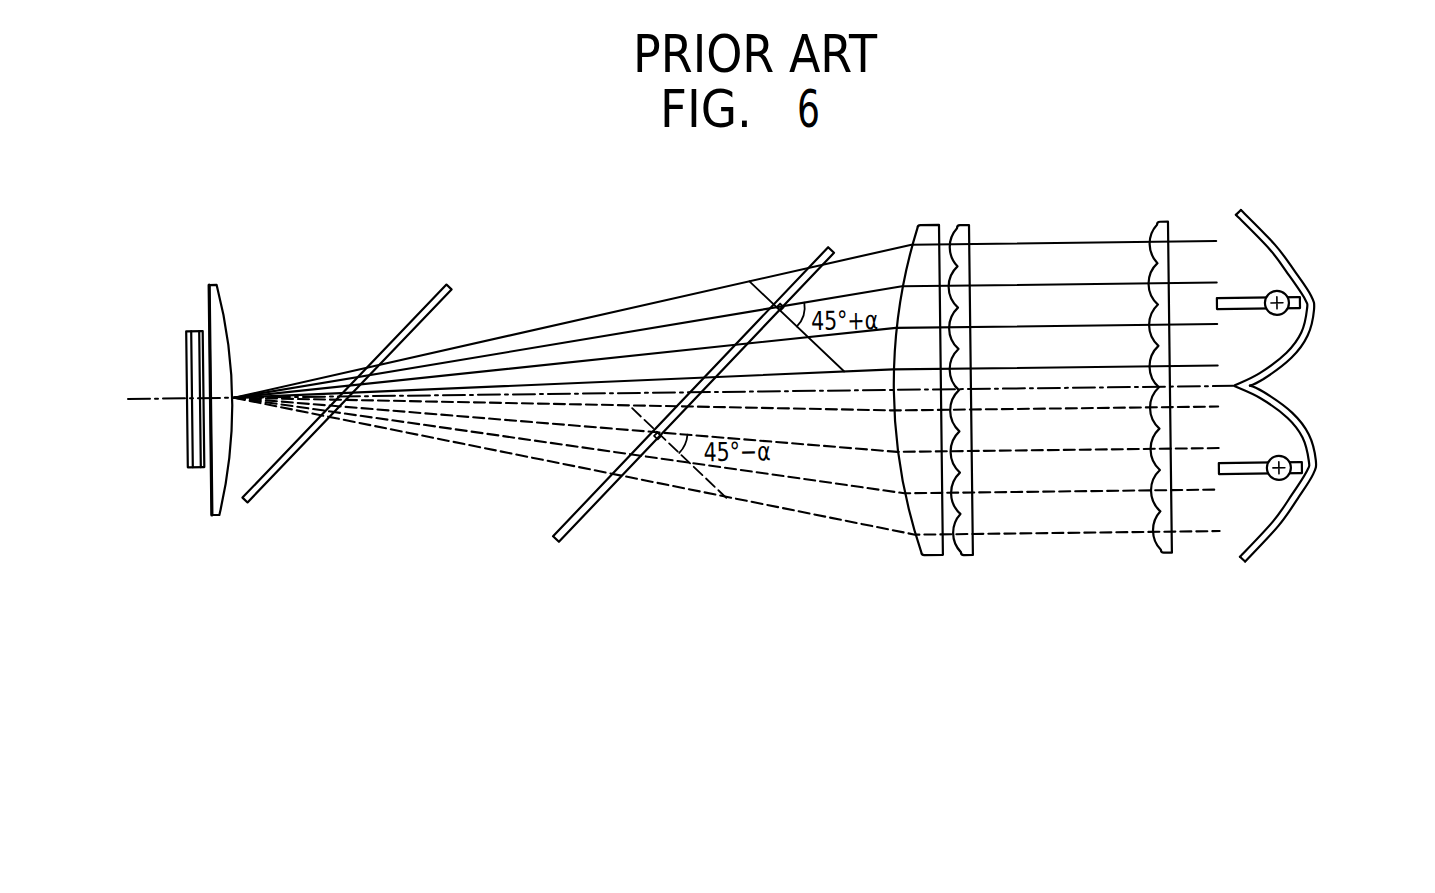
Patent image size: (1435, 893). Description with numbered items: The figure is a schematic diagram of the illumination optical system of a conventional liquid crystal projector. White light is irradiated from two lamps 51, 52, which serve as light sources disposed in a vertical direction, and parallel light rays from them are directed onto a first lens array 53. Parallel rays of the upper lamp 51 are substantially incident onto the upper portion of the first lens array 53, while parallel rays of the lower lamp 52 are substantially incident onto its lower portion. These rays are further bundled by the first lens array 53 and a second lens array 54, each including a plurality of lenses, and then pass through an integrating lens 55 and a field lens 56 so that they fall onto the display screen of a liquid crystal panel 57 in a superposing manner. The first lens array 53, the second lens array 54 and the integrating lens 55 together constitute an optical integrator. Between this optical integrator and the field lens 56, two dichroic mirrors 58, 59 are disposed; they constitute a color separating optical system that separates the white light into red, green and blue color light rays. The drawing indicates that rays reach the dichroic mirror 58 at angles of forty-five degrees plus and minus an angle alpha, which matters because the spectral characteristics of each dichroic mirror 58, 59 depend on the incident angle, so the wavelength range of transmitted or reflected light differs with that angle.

The lamp 51 is at (1313, 302).
The lamp 52 is at (1310, 471).
The first lens array 53 is at (1161, 564).
The second lens array 54 is at (969, 564).
The integrating lens 55 is at (924, 565).
The field lens 56 is at (216, 517).
The liquid crystal panel 57 is at (196, 468).
The dichroic mirror 58 is at (584, 520).
The dichroic mirror 59 is at (268, 482).